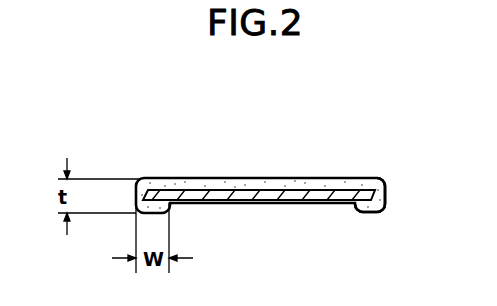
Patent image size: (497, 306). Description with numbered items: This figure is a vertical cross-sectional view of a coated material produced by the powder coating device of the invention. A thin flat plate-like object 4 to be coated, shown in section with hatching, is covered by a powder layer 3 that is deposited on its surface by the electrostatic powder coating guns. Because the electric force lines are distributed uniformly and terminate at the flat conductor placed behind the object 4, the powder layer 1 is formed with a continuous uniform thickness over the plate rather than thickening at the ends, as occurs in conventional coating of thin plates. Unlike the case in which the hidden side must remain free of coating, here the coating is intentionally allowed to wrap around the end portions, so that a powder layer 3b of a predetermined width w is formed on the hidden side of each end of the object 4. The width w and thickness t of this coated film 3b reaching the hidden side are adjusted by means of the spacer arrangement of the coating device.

The powder layer 1 is at (303, 180).
The powder layer 3 is at (381, 179).
The powder layer 3b is at (368, 213).
The object to be coated 4 is at (262, 204).